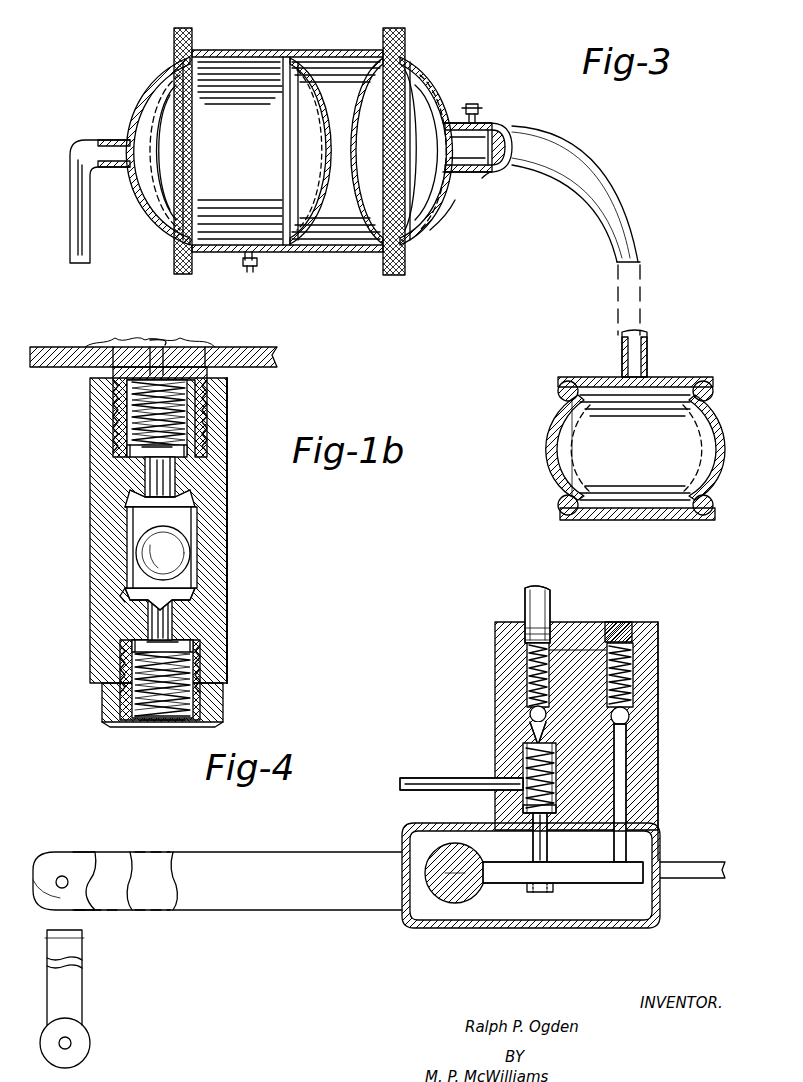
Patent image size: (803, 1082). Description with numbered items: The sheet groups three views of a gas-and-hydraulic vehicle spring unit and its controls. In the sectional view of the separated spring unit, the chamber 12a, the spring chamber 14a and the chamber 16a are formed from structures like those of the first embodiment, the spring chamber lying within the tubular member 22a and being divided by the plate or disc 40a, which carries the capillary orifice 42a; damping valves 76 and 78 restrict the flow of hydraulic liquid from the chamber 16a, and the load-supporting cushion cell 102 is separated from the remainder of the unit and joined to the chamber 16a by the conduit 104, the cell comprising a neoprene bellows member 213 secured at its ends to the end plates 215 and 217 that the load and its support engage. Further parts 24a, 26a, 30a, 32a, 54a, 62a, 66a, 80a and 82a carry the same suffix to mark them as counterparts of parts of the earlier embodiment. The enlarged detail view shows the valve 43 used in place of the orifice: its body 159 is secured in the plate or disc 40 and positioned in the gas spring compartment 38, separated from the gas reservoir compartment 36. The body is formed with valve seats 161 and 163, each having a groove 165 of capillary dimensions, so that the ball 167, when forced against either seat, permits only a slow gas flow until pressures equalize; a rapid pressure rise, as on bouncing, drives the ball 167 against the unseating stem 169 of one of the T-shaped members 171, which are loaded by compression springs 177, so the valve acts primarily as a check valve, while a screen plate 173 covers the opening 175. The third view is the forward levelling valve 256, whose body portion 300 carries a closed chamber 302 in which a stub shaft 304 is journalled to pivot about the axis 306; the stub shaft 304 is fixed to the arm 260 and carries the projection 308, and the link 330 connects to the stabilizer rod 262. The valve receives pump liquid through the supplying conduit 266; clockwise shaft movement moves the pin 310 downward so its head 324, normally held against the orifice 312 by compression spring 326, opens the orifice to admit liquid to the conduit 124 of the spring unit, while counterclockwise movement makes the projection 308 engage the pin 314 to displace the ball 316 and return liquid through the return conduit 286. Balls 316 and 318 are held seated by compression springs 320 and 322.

In FIG. 3, the chamber 12a is at (145, 92).
In FIG. 3, the spring chamber 14a is at (272, 57).
In FIG. 3, the chamber 16a is at (436, 195).
In FIG. 3, the tubular member 22a is at (242, 255).
In FIG. 3, the cylinder shell 24a is at (218, 128).
In FIG. 3, the bellows inner wall 26a is at (400, 172).
In FIG. 3, the inlet pipe 30a is at (158, 220).
In FIG. 3, the bellows end wall 32a is at (430, 235).
In FIG. 3, the plate or disc 40a is at (348, 58).
In FIG. 3, the orifice 42a is at (312, 145).
In FIG. 3, the intermediate bellows 54a is at (366, 207).
In FIG. 3, the bellows fold 62a is at (130, 155).
In FIG. 3, the vent valve 66a is at (472, 103).
In FIG. 3, the damping valve 76 is at (495, 175).
In FIG. 3, the damping valve 78 is at (492, 127).
In FIG. 3, the drain plug 80a is at (258, 272).
In FIG. 3, the vent fitting 82a is at (478, 106).
In FIG. 3, the cushion cell 102 is at (555, 392).
In FIG. 3, the conduit 104 is at (605, 207).
In FIG. 3, the bellows member 213 is at (710, 422).
In FIG. 3, the end plate 215 is at (688, 518).
In FIG. 3, the end plate 217 is at (678, 380).
In FIG. 1B, the gas reservoir compartment 36 is at (245, 328).
In FIG. 1B, the gas spring compartment 38 is at (78, 413).
In FIG. 1B, the plate or disc 40 is at (268, 357).
In FIG. 1B, the valve 43 is at (78, 483).
In FIG. 1B, the body 159 is at (222, 517).
In FIG. 1B, the valve seat 161 is at (128, 513).
In FIG. 1B, the valve seat 163 is at (125, 594).
In FIG. 1B, the groove 165 is at (185, 500).
In FIG. 1B, the ball 167 is at (175, 555).
In FIG. 1B, the unseating stem 169 is at (160, 475).
In FIG. 1B, the T-shaped member 171 is at (130, 450).
In FIG. 1B, the screen plate 173 is at (140, 340).
In FIG. 1B, the opening 175 is at (158, 345).
In FIG. 1B, the compression spring 177 is at (205, 409).
In FIG. 4, the conduit 124 is at (522, 602).
In FIG. 4, the levelling valve 256 is at (667, 685).
In FIG. 4, the arm 260 is at (300, 855).
In FIG. 4, the stabilizer rod 262 is at (72, 1044).
In FIG. 4, the hydraulic liquid supplying conduit 266 is at (420, 776).
In FIG. 4, the return conduit 286 is at (705, 880).
In FIG. 4, the body portion 300 is at (648, 753).
In FIG. 4, the closed chamber 302 is at (559, 928).
In FIG. 4, the stub shaft 304 is at (460, 900).
In FIG. 4, the axis 306 is at (440, 915).
In FIG. 4, the projection 308 is at (612, 904).
In FIG. 4, the pin 310 is at (533, 851).
In FIG. 4, the orifice 312 is at (528, 735).
In FIG. 4, the pin 314 is at (628, 782).
In FIG. 4, the ball 316 is at (632, 716).
In FIG. 4, the ball 318 is at (530, 715).
In FIG. 4, the compression spring 320 is at (633, 665).
In FIG. 4, the compression spring 322 is at (527, 672).
In FIG. 4, the head 324 is at (523, 750).
In FIG. 4, the compression spring 326 is at (523, 808).
In FIG. 4, the link 330 is at (72, 993).